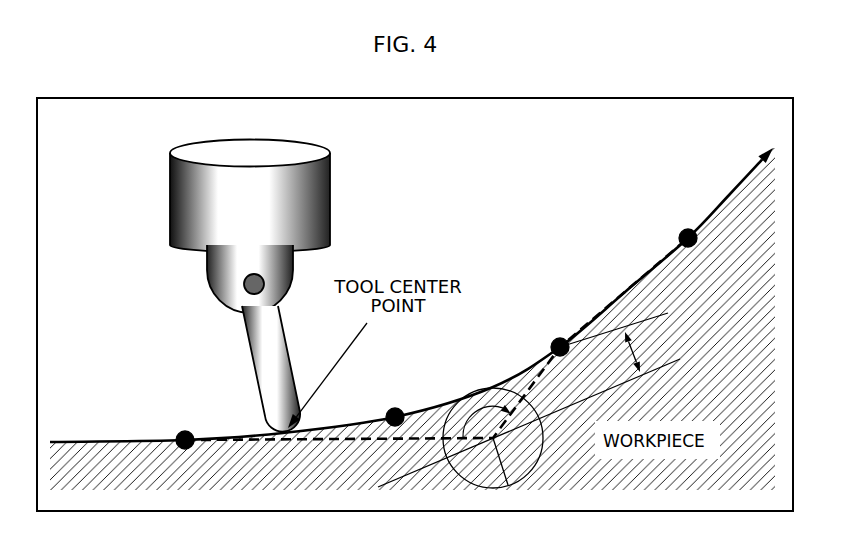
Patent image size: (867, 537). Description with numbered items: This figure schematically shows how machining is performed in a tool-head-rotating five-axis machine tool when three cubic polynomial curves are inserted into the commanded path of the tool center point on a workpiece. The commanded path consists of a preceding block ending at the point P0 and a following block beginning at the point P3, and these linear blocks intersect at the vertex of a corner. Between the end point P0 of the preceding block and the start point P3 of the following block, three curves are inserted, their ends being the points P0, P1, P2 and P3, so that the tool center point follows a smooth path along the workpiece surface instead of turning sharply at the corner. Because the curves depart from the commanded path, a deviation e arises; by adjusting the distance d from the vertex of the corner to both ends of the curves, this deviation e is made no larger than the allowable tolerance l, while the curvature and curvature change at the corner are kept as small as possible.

The end point of preceding block P0 is at (186, 422).
The curve end point P1 is at (392, 400).
The curve end point P2 is at (555, 333).
The start point of following block P3 is at (673, 227).
The allowable tolerance l is at (505, 461).
The deviation e is at (641, 351).